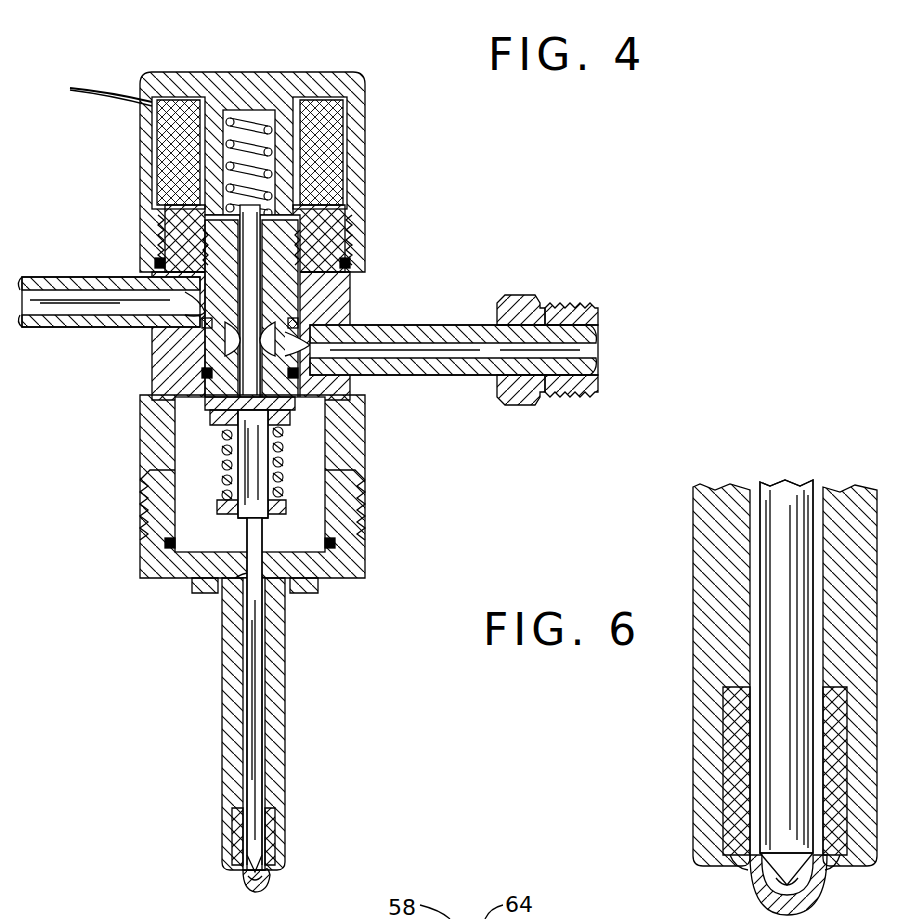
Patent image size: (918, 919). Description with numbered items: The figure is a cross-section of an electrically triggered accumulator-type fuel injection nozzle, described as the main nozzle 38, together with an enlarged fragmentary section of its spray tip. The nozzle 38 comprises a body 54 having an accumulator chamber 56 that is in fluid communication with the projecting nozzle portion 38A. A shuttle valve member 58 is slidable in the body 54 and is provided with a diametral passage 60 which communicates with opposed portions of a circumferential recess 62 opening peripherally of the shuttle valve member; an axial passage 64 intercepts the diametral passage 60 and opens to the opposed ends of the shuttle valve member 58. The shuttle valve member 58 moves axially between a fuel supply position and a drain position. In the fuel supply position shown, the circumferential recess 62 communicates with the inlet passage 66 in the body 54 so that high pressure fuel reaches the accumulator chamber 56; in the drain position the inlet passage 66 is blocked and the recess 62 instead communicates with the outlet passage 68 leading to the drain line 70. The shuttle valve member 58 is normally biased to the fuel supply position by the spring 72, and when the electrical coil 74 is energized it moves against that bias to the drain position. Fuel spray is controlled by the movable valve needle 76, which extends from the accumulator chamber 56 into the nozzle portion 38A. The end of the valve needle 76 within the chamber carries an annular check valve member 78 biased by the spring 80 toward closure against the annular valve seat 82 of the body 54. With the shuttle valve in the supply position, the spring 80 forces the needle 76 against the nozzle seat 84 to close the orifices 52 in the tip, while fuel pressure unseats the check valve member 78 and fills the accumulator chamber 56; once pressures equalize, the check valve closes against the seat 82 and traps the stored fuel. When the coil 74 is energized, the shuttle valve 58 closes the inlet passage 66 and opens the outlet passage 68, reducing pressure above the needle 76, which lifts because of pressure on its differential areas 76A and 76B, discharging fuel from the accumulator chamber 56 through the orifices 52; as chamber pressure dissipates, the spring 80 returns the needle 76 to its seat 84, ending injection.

In FIG. 4, the main nozzle 38 is at (308, 474).
In FIG. 4, the projecting nozzle portion 38A is at (233, 768).
In FIG. 6, the projecting nozzle portion 38A is at (730, 568).
In FIG. 4, the discharge orifices 52 is at (270, 880).
In FIG. 6, the discharge orifices 52 is at (812, 892).
In FIG. 4, the body 54 is at (285, 280).
In FIG. 4, the accumulator chamber 56 is at (310, 527).
In FIG. 4, the shuttle valve member 58 is at (268, 258).
In FIG. 4, the diametral passage 60 is at (238, 342).
In FIG. 4, the circumferential recess 62 is at (228, 332).
In FIG. 4, the axial passage 64 is at (250, 238).
In FIG. 4, the inlet passage 66 is at (288, 340).
In FIG. 4, the outlet passage 68 is at (178, 310).
In FIG. 4, the drain line 70 is at (92, 284).
In FIG. 4, the spring 72 is at (245, 118).
In FIG. 4, the electrical coil 74 is at (340, 122).
In FIG. 4, the valve needle 76 is at (253, 735).
In FIG. 6, the valve needle 76 is at (782, 658).
In FIG. 4, the differential area 76A is at (215, 580).
In FIG. 4, the differential area 76B is at (210, 592).
In FIG. 4, the annular check valve member 78 is at (213, 420).
In FIG. 4, the spring 80 is at (280, 475).
In FIG. 4, the annular valve seat 82 is at (288, 414).
In FIG. 4, the nozzle seat 84 is at (245, 872).
In FIG. 6, the nozzle seat 84 is at (758, 870).